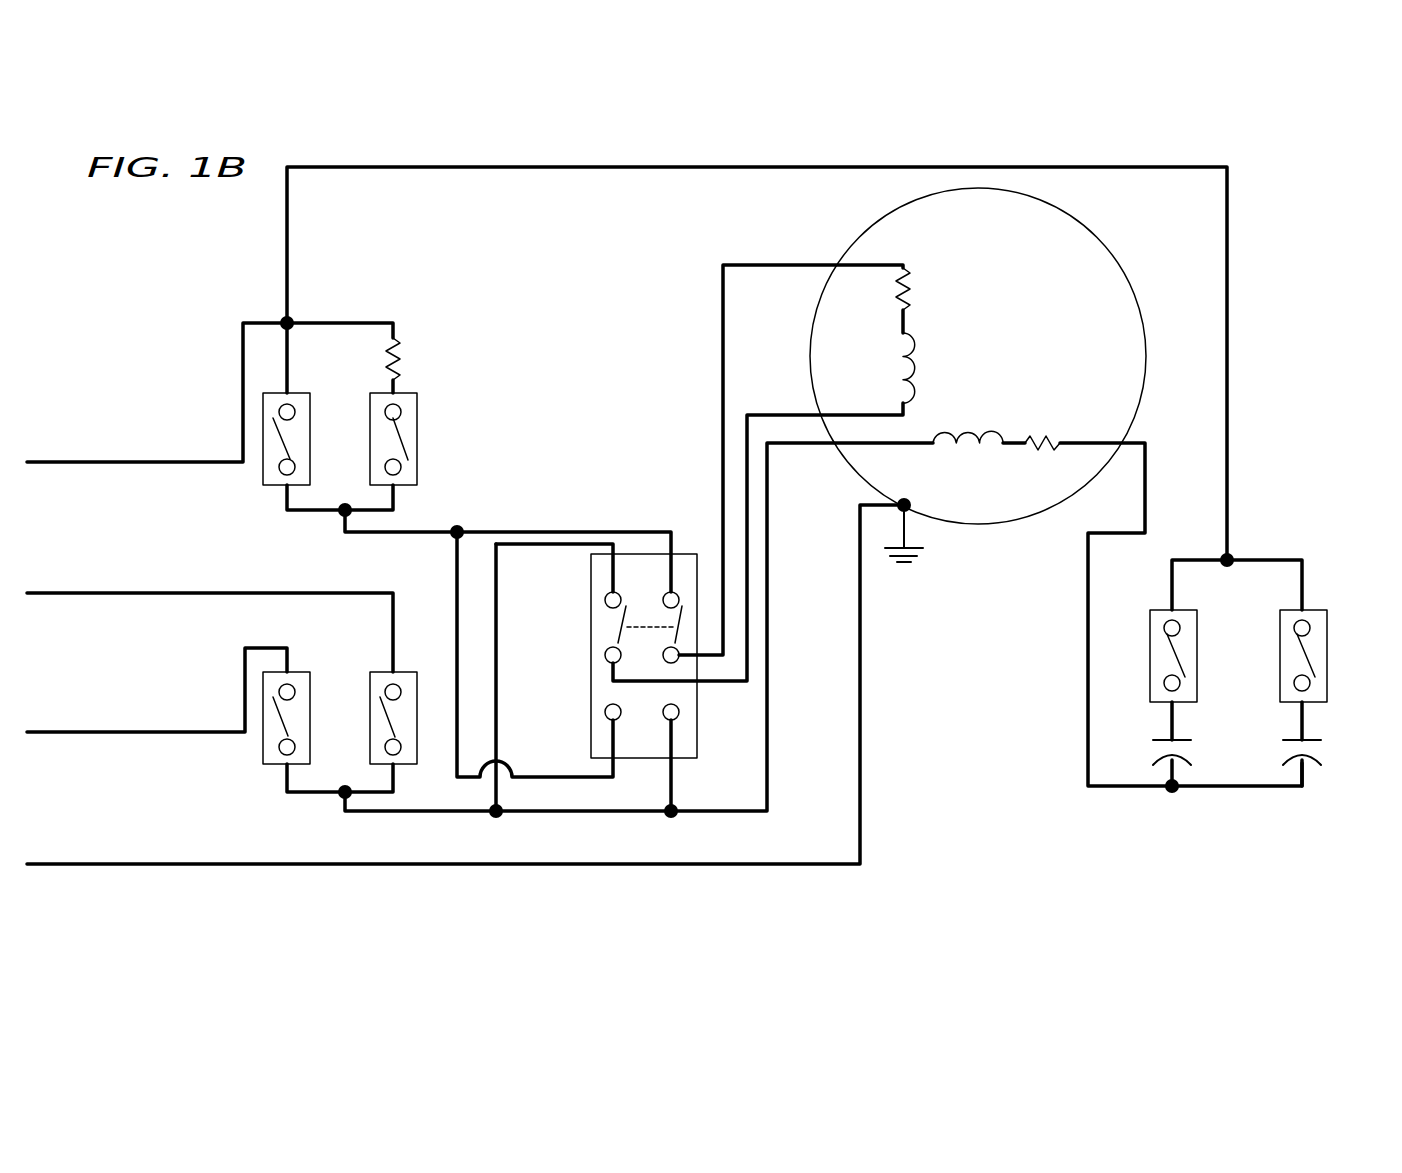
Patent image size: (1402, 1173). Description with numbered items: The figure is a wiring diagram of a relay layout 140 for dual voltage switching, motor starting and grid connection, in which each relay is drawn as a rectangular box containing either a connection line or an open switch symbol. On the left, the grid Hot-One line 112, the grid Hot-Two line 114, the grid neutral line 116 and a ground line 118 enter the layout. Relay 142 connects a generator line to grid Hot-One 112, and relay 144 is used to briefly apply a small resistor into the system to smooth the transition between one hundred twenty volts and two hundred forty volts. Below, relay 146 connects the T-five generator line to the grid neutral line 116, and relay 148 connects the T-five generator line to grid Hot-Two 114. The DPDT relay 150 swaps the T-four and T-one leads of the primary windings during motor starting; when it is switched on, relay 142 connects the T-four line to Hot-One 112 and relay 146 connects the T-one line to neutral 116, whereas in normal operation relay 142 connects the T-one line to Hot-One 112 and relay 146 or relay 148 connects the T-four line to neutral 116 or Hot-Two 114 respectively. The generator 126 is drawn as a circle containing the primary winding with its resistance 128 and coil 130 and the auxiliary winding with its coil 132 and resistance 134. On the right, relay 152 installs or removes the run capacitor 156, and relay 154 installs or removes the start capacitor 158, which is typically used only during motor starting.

The grid Hot-1 line 112 is at (124, 464).
The grid Hot-2 line 114 is at (124, 595).
The grid neutral line 116 is at (124, 734).
The ground line 118 is at (123, 866).
The generator 126 is at (1124, 267).
The primary winding resistance 128 is at (903, 294).
The primary winding 130 is at (903, 372).
The auxiliary winding 132 is at (1003, 431).
The auxiliary winding resistance 134 is at (1050, 438).
The relay layout 140 is at (660, 166).
The relay 142 is at (263, 485).
The relay 144 is at (418, 443).
The relay 146 is at (263, 764).
The relay 148 is at (391, 670).
The DPDT relay 150 is at (683, 552).
The relay 152 is at (1197, 630).
The relay 154 is at (1327, 630).
The run capacitor 156 is at (1193, 748).
The start capacitor 158 is at (1323, 748).